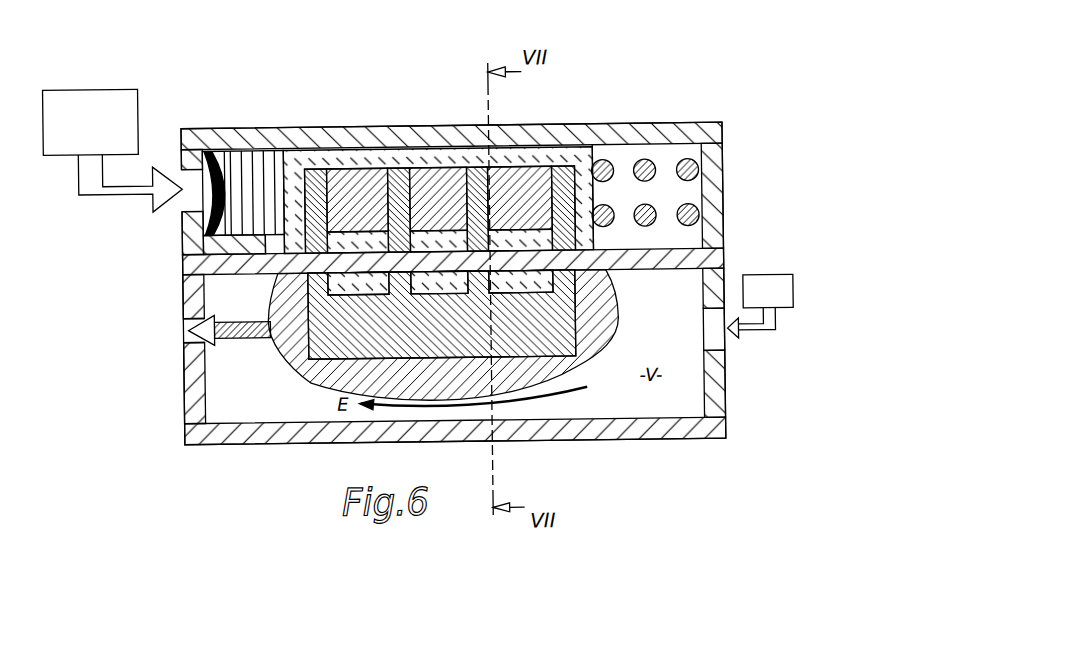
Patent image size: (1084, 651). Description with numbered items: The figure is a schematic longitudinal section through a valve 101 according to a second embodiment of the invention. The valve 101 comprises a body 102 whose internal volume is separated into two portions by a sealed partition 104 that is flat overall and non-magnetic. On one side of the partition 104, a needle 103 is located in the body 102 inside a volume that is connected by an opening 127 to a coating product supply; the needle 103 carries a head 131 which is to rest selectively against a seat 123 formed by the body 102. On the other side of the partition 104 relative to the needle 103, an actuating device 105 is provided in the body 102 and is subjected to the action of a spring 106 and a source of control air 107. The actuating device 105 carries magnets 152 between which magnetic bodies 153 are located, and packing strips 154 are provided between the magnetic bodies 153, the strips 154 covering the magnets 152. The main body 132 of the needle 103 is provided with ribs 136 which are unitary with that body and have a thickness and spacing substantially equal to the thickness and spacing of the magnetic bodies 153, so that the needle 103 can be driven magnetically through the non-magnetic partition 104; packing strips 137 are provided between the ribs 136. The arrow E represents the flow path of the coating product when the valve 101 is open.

The valve 101 is at (657, 102).
The body 102 is at (670, 124).
The needle 103 is at (329, 376).
The sealed partition 104 is at (703, 265).
The actuating device 105 is at (431, 179).
The spring 106 is at (694, 166).
The source of control air 107 is at (113, 151).
The seat 123 is at (195, 393).
The opening 127 is at (711, 341).
The head 131 is at (182, 324).
The main body of the needle 132 is at (442, 314).
The ribs 136 is at (185, 300).
The packing strips 137 is at (522, 291).
The magnets 152 is at (362, 176).
The magnetic bodies 153 is at (315, 176).
The packing strips 154 is at (594, 242).